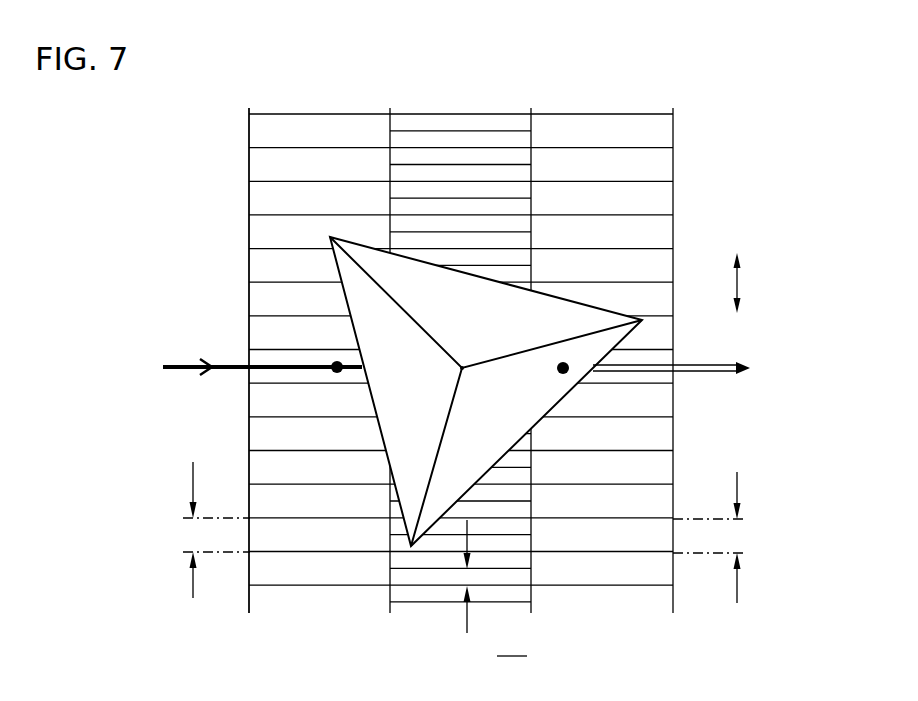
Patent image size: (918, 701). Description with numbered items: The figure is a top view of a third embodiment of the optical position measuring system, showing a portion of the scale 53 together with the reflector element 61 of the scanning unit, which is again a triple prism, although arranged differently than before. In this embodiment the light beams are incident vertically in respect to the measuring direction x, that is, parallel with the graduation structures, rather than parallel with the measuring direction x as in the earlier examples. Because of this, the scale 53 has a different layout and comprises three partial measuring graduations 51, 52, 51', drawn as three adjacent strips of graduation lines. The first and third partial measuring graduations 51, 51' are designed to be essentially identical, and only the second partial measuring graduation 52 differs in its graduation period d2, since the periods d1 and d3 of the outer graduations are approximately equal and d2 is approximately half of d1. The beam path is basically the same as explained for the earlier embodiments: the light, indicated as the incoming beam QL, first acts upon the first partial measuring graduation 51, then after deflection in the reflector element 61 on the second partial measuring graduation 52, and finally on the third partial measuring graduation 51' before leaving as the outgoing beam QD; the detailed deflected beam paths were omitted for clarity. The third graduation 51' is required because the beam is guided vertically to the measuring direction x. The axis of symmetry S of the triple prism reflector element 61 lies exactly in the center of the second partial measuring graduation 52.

The first partial measuring graduation 51 is at (319, 306).
The second partial measuring graduation 52 is at (457, 88).
The third partial measuring graduation 51' is at (602, 306).
The scale 53 is at (216, 232).
The reflector element 61 is at (573, 323).
The axis of symmetry S is at (462, 366).
The incident light beam QL is at (138, 374).
The diffracted light beam QD is at (793, 384).
The measuring direction X is at (750, 283).
The graduation period of the first measuring graduation d1 is at (215, 530).
The graduation period of the second measuring graduation d2 is at (487, 604).
The graduation period of the third measuring graduation d3 is at (743, 537).